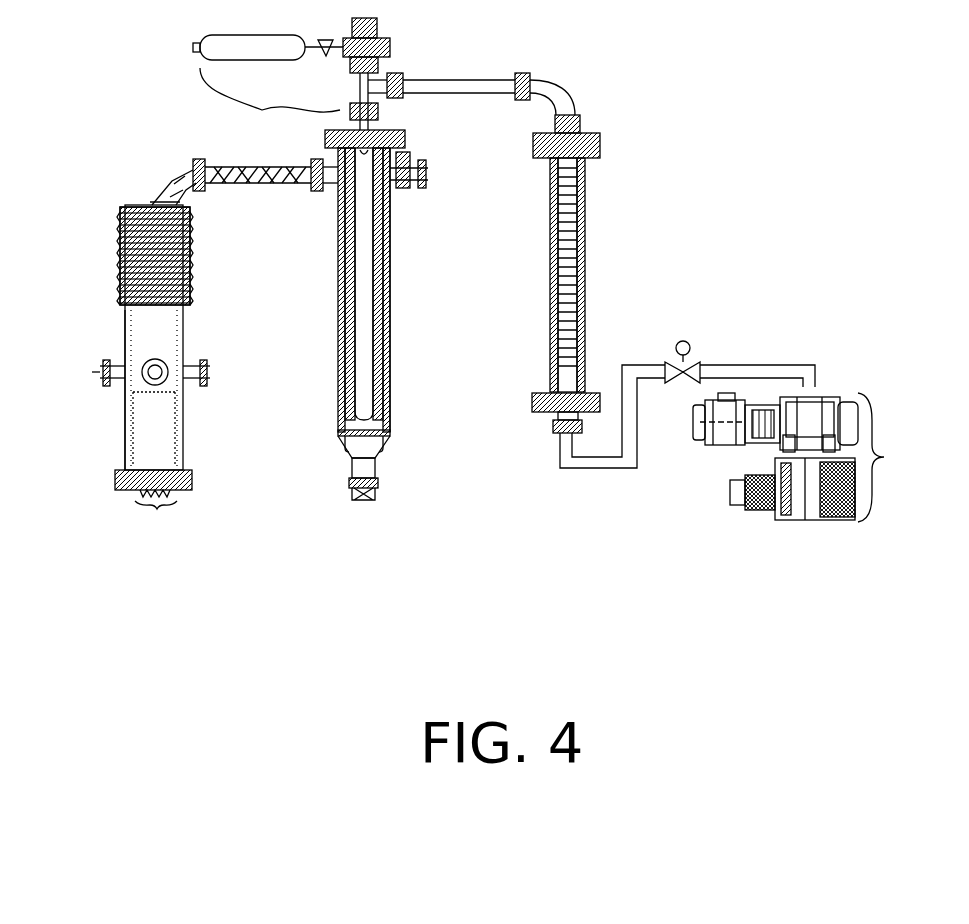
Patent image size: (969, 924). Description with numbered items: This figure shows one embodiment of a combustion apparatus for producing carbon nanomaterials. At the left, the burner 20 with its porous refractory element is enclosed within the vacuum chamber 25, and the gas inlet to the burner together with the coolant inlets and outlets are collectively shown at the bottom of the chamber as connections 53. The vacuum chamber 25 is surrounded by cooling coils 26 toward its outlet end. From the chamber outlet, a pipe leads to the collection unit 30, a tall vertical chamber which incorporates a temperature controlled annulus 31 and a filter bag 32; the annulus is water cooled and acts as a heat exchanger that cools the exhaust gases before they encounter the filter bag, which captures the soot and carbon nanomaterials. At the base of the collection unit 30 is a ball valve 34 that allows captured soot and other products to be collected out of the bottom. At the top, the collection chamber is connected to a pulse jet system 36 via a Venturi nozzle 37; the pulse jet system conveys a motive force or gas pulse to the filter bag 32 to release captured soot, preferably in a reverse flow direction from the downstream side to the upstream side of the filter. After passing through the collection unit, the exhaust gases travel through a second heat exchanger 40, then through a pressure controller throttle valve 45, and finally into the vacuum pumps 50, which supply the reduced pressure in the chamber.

The burner 20 is at (160, 420).
The vacuum chamber 25 is at (145, 333).
The cooling coils 26 is at (120, 264).
The collection unit 30 is at (369, 276).
The temperature controlled annulus 31 is at (385, 232).
The filter bag 32 is at (385, 372).
The ball valve 34 is at (380, 495).
The pulse jet system 36 is at (268, 89).
The Venturi nozzle 37 is at (410, 152).
The heat exchanger 40 is at (588, 232).
The pressure controller throttle valve 45 is at (690, 344).
The vacuum pumps 50 is at (806, 457).
The gas inlet and coolant inlets and outlets 53 is at (156, 514).